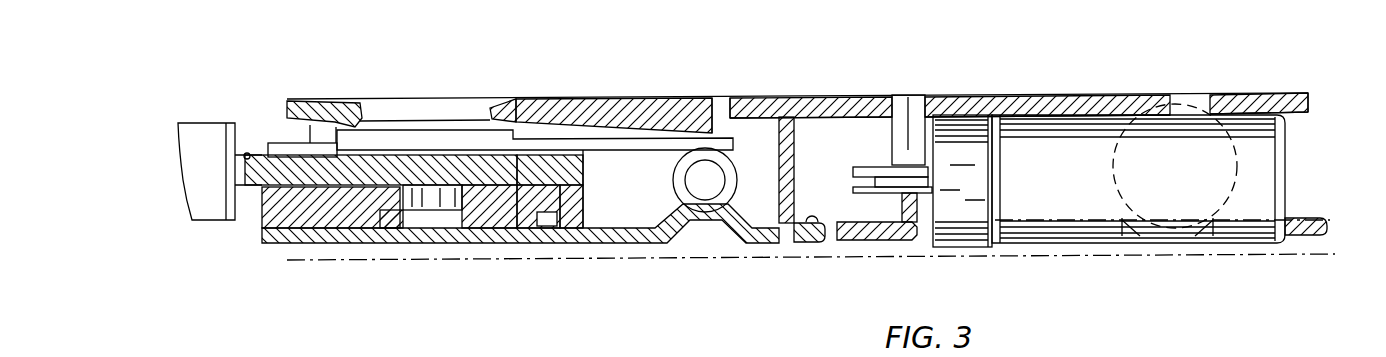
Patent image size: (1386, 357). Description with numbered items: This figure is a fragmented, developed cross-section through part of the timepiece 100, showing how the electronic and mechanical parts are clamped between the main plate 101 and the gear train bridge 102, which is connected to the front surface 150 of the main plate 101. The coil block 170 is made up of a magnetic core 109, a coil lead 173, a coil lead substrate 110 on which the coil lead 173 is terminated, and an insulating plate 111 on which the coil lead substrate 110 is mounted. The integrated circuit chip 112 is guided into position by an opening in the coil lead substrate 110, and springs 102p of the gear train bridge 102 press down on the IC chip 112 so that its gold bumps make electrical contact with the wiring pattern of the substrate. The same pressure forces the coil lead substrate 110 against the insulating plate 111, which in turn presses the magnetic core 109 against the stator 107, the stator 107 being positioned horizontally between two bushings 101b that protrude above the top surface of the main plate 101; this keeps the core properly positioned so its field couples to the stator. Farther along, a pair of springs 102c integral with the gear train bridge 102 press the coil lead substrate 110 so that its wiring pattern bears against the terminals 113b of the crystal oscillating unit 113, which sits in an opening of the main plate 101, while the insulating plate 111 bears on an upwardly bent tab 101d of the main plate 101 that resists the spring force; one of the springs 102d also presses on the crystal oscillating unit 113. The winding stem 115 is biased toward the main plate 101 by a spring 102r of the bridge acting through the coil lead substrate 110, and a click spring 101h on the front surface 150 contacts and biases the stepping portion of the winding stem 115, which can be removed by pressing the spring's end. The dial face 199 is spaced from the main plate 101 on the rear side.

The timepiece 100 is at (292, 322).
The main plate 101 is at (336, 245).
The bushings 101b is at (405, 213).
The upwardly bent tab 101d is at (913, 228).
The click spring 101h is at (657, 232).
The gear train bridge 102 is at (822, 106).
The springs 102c is at (912, 150).
The springs 102d is at (1132, 106).
The springs 102p is at (505, 113).
The spring 102r is at (690, 112).
The stator 107 is at (280, 232).
The magnetic core 109 is at (258, 165).
The coil lead substrate 110 is at (306, 146).
The insulating plate 111 is at (522, 200).
The integrated circuit chip 112 is at (416, 135).
The crystal oscillating unit 113 is at (1246, 126).
The terminals 113b is at (930, 193).
The winding stem 115 is at (705, 195).
The front surface 150 is at (812, 226).
The coil block 170 is at (243, 107).
The coil lead 173 is at (240, 150).
The dial face 199 is at (1260, 252).